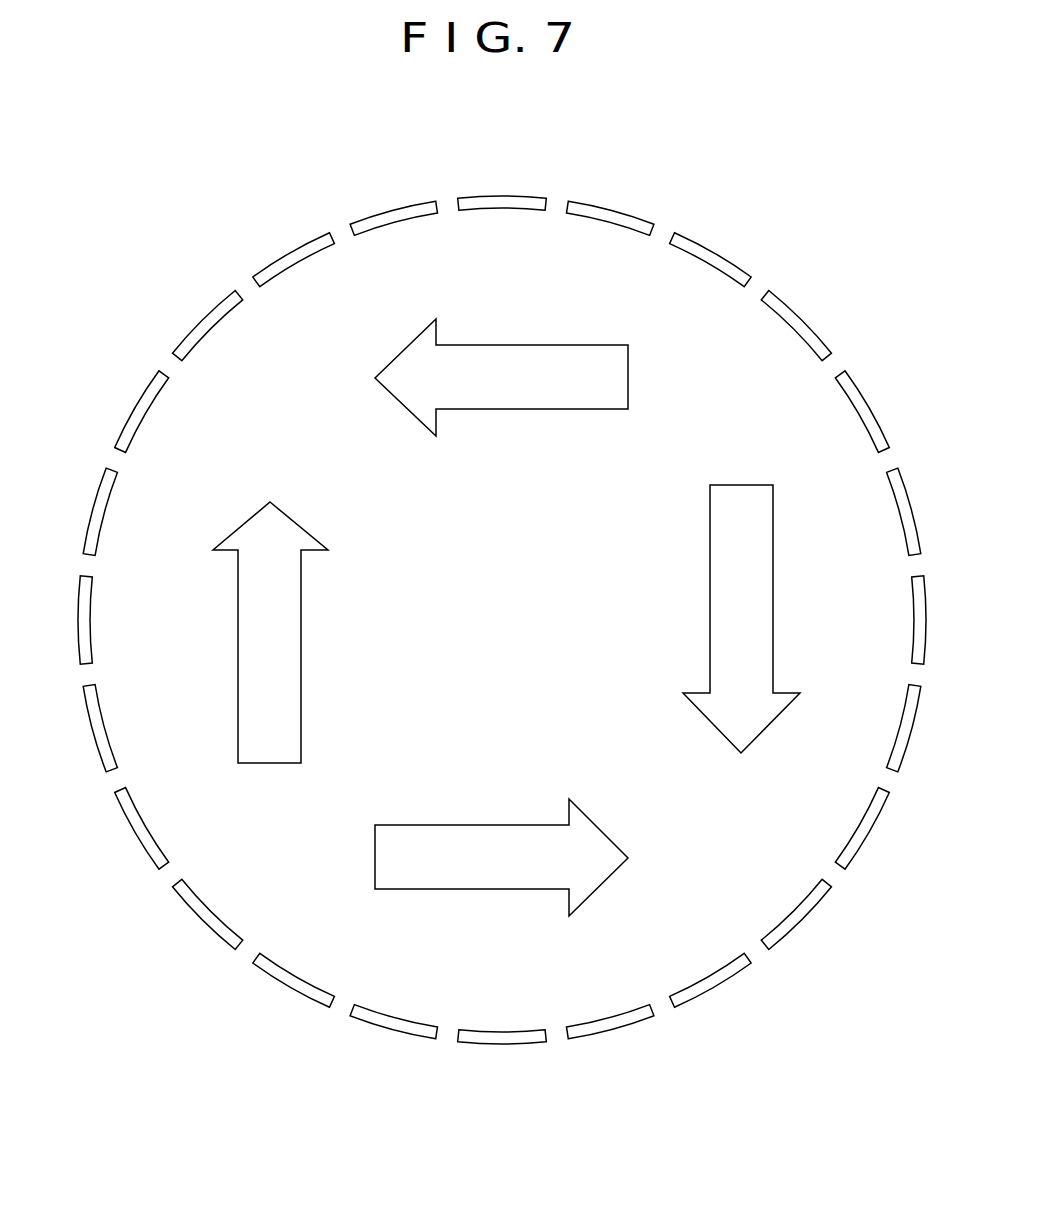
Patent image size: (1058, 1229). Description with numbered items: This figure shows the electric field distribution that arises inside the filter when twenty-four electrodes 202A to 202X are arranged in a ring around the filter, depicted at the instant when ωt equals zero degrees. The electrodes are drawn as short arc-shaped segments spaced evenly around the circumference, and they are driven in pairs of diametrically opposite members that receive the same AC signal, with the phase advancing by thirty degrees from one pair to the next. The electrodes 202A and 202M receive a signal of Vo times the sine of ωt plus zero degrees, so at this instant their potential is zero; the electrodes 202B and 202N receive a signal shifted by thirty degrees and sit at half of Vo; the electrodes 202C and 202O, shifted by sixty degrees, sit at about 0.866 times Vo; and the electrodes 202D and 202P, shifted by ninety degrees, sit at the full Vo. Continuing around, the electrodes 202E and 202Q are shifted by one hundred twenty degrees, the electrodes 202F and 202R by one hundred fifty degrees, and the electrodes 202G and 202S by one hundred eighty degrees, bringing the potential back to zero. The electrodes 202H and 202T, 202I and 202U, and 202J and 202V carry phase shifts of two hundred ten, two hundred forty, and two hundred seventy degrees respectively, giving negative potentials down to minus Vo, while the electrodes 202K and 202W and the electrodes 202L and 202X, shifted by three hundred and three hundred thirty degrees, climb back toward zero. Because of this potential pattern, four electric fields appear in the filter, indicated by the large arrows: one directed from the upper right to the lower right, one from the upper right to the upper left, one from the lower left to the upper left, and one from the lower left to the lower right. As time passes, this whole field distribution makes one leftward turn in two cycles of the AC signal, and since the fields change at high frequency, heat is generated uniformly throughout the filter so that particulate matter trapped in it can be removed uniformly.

The electrode 202A is at (500, 197).
The electrode 202B is at (638, 184).
The electrode 202C is at (708, 243).
The electrode 202D is at (797, 312).
The electrode 202E is at (858, 377).
The electrode 202F is at (895, 470).
The electrode 202G is at (928, 598).
The electrode 202H is at (915, 713).
The electrode 202I is at (870, 833).
The electrode 202J is at (828, 893).
The electrode 202K is at (720, 987).
The electrode 202L is at (627, 1030).
The electrode 202M is at (507, 1045).
The electrode 202N is at (385, 1030).
The electrode 202O is at (278, 985).
The electrode 202P is at (200, 920).
The electrode 202Q is at (147, 857).
The electrode 202R is at (104, 765).
The electrode 202S is at (77, 600).
The electrode 202T is at (107, 467).
The electrode 202U is at (147, 382).
The electrode 202V is at (198, 318).
The electrode 202W is at (285, 252).
The electrode 202X is at (378, 212).